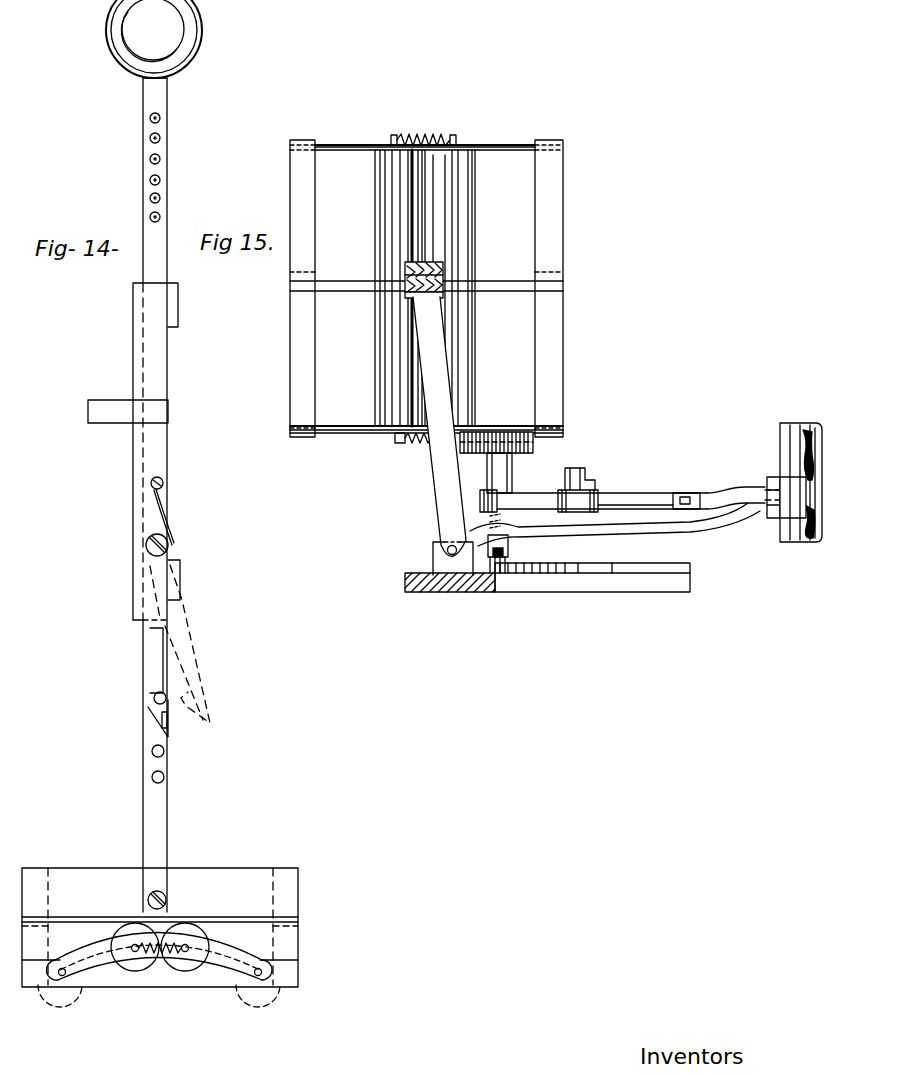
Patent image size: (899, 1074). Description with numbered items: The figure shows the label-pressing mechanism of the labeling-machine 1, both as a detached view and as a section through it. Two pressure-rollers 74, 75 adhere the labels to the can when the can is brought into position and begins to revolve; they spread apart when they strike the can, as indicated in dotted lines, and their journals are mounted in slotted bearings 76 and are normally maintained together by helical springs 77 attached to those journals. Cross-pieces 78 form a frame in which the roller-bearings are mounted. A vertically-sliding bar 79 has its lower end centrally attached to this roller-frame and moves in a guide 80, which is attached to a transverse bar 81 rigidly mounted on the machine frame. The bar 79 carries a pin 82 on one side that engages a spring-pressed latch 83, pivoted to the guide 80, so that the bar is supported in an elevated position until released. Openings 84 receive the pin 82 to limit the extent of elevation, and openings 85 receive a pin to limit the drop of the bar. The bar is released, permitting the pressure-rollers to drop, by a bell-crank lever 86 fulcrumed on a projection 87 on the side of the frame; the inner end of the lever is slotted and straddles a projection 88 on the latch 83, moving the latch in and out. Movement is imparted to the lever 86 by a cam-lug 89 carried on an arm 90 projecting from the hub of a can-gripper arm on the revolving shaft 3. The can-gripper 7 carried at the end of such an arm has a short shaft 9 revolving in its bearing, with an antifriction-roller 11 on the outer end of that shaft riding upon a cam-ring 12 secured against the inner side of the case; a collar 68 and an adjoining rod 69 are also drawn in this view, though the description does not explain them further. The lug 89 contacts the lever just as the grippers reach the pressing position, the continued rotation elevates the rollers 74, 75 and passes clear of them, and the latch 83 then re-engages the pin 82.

In FIG. 15, the base 1 is at (465, 590).
In FIG. 15, the revolving shaft 3 is at (790, 440).
In FIG. 15, the can-gripper 7 is at (478, 451).
In FIG. 15, the short shaft 9 is at (512, 468).
In FIG. 15, the antifriction-roller 11 is at (508, 555).
In FIG. 15, the cam-ring 12 is at (572, 570).
In FIG. 15, the collar 68 is at (584, 482).
In FIG. 15, the rod 69 is at (620, 497).
In FIG. 14, the pressure-roller 74 is at (136, 972).
In FIG. 15, the pressure-roller 74 is at (398, 355).
In FIG. 14, the pressure-roller 75 is at (191, 972).
In FIG. 15, the pressure-roller 75 is at (472, 350).
In FIG. 14, the slotted bearing 76 is at (234, 952).
In FIG. 15, the slotted bearing 76 is at (348, 144).
In FIG. 15, the helical spring 77 is at (402, 452).
In FIG. 14, the cross-piece 78 is at (246, 876).
In FIG. 15, the cross-piece 78 is at (426, 288).
In FIG. 14, the vertically-sliding bar 79 is at (155, 495).
In FIG. 15, the vertically-sliding bar 79 is at (405, 282).
In FIG. 14, the guide 80 is at (171, 503).
In FIG. 15, the guide 80 is at (435, 264).
In FIG. 14, the transverse bar 81 is at (128, 411).
In FIG. 14, the pin 82 is at (154, 697).
In FIG. 14, the spring-pressed latch 83 is at (165, 643).
In FIG. 15, the spring-pressed latch 83 is at (408, 296).
In FIG. 14, the openings 84 is at (152, 776).
In FIG. 14, the openings 85 is at (160, 215).
In FIG. 15, the bell-crank lever 86 is at (586, 426).
In FIG. 15, the projection 87 is at (433, 557).
In FIG. 14, the projection 88 is at (162, 721).
In FIG. 15, the projection 88 is at (427, 310).
In FIG. 15, the cam-lug 89 is at (686, 486).
In FIG. 15, the arm 90 is at (712, 497).